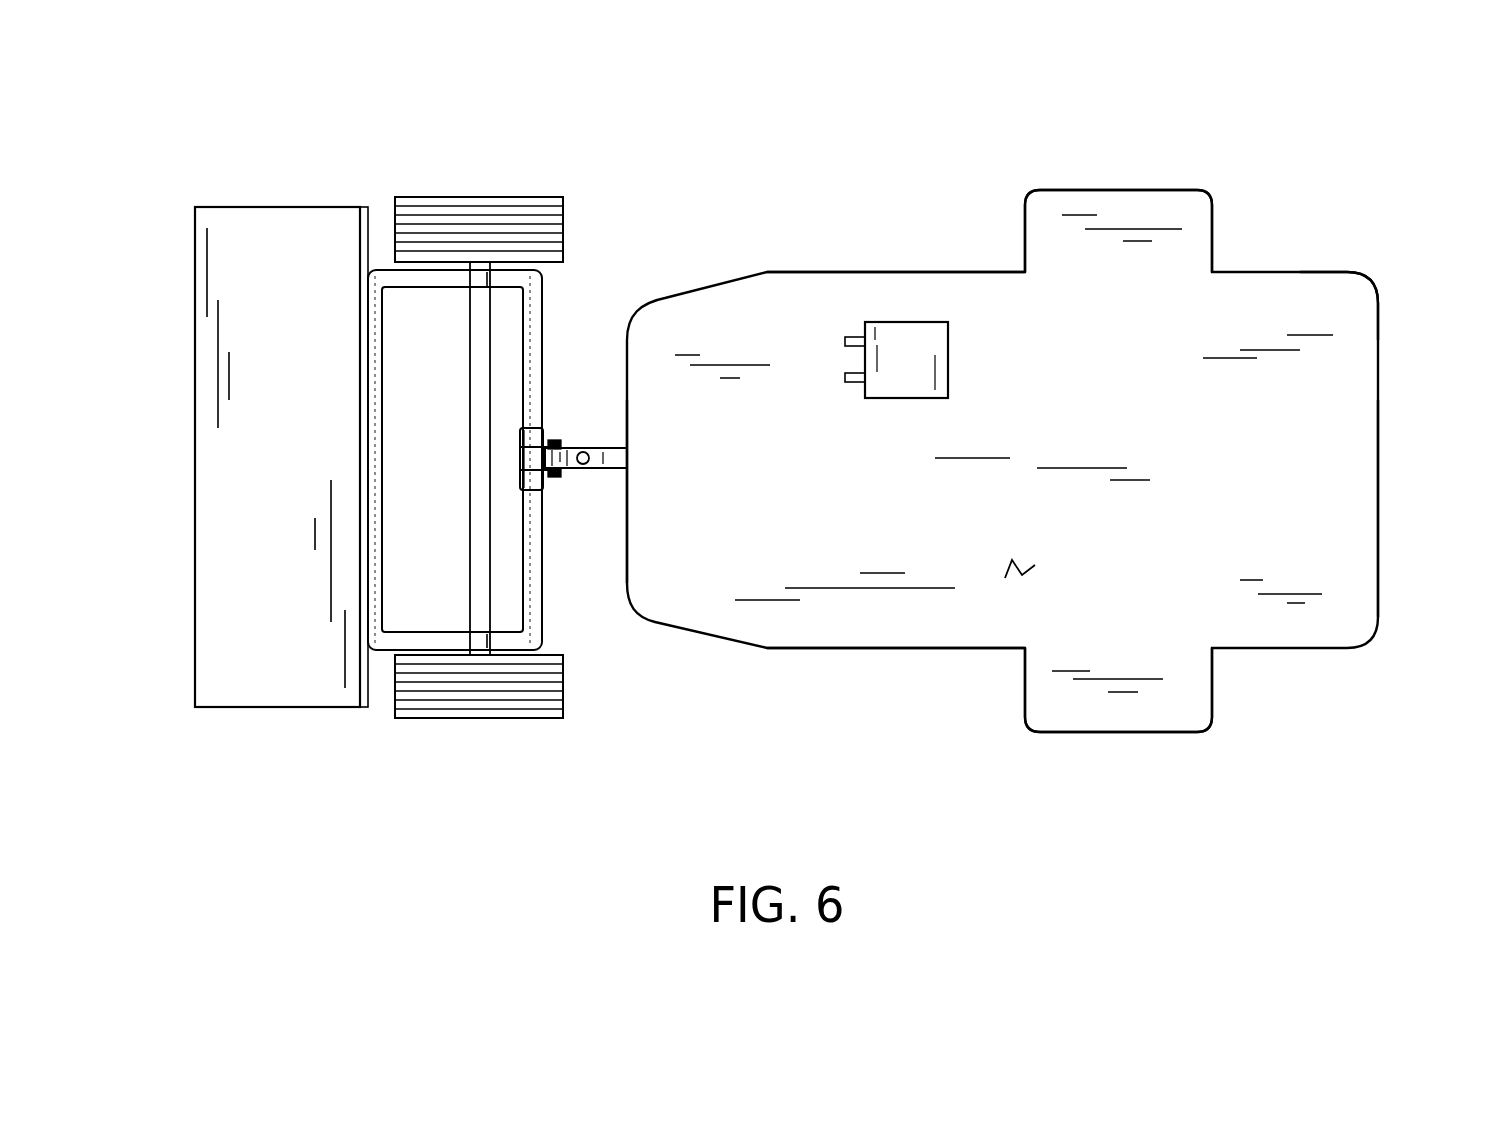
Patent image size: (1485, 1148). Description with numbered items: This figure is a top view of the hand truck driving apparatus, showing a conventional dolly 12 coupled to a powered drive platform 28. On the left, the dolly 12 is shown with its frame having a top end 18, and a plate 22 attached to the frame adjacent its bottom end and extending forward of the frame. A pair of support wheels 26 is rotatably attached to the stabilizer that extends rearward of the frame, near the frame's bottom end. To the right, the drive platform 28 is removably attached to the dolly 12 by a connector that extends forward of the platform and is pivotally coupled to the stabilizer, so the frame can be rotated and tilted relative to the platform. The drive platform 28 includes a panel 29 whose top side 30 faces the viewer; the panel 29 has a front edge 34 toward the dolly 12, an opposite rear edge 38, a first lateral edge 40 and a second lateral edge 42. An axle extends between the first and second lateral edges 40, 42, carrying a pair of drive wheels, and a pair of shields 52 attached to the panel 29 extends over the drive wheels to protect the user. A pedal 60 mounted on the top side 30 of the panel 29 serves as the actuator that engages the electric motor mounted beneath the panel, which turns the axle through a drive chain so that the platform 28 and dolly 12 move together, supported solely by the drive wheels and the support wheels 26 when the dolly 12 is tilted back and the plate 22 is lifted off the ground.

The dolly 12 is at (583, 146).
The top end 18 is at (373, 627).
The plate 22 is at (195, 530).
The support wheels 26 is at (497, 718).
The drive platform 28 is at (778, 240).
The panel 29 is at (1367, 287).
The top side 30 is at (1008, 568).
The front edge 34 is at (627, 543).
The rear edge 38 is at (1378, 538).
The first lateral edge 40 is at (855, 650).
The second lateral edge 42 is at (948, 272).
The shields 52 is at (1107, 190).
The pedal 60 is at (903, 345).